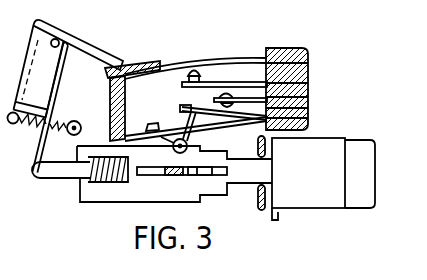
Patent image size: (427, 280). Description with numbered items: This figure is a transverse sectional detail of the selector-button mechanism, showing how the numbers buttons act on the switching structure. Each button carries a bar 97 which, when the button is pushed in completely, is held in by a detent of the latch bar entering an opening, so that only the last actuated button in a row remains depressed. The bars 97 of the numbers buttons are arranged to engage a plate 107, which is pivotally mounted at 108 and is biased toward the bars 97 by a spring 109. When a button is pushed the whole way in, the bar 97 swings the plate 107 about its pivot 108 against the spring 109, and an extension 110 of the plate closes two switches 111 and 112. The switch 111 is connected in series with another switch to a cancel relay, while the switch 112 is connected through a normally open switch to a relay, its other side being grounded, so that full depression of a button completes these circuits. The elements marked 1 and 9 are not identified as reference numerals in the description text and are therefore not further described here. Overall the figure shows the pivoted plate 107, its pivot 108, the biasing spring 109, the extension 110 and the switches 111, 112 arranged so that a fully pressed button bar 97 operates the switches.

The housing 1 is at (346, 192).
The end cap 9 is at (364, 192).
The bar 97 is at (224, 177).
The plate 107 is at (30, 177).
The pivot 108 is at (69, 34).
The spring 109 is at (60, 120).
The extension 110 is at (97, 48).
The switch 111 is at (208, 72).
The switch 112 is at (307, 105).